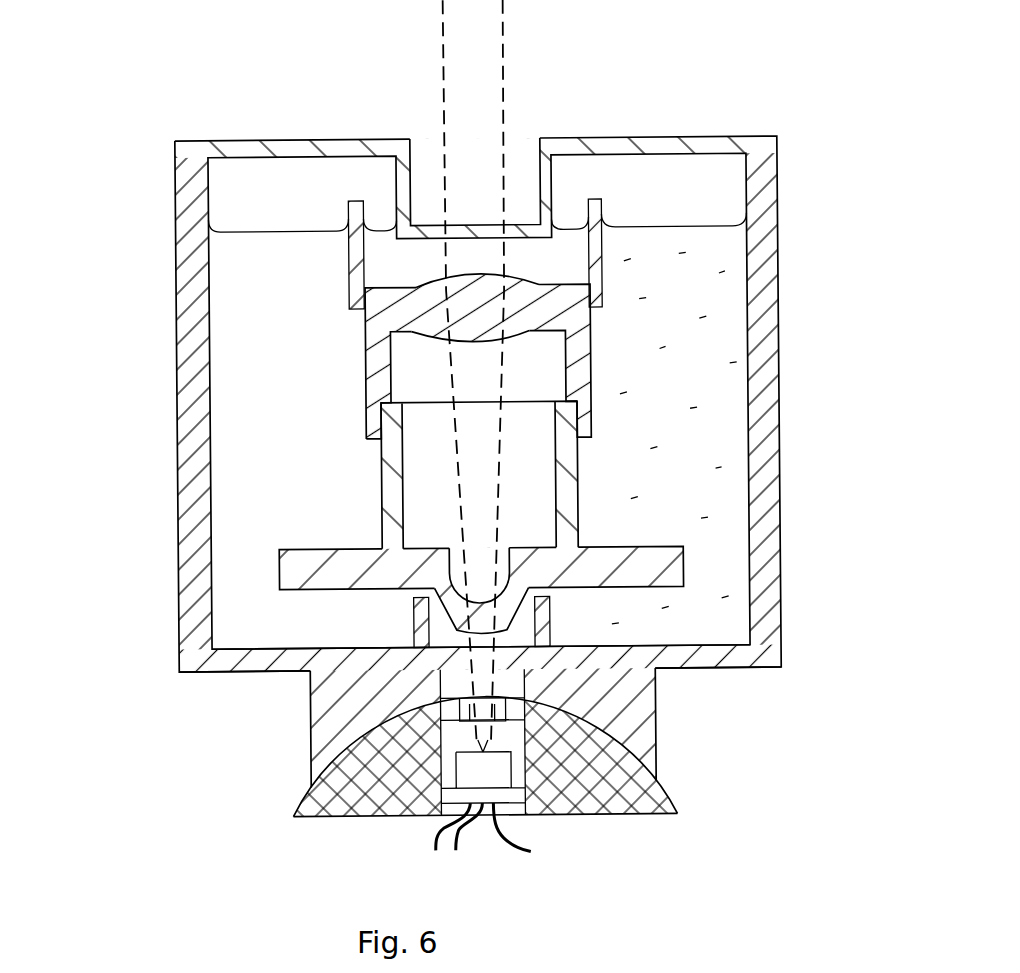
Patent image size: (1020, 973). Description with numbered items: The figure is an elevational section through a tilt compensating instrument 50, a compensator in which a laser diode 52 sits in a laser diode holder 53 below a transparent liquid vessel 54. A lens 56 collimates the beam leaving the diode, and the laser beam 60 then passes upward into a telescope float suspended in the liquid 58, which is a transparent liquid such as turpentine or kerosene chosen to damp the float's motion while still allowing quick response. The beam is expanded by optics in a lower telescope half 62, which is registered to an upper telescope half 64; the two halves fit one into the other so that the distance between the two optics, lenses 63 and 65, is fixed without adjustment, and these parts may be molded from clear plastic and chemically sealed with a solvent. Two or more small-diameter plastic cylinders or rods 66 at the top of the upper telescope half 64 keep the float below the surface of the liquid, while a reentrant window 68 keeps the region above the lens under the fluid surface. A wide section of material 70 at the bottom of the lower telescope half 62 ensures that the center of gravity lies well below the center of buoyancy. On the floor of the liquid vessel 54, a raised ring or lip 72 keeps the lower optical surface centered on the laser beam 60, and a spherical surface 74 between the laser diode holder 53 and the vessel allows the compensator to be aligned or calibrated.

The sensor assembly 50 is at (202, 62).
The laser diode 52 is at (487, 792).
The laser diode holder 53 is at (635, 813).
The transparent liquid vessel 54 is at (752, 667).
The lens 56 is at (493, 700).
The liquid 58 is at (683, 615).
The laser beam 60 is at (502, 468).
The lower telescope half 62 is at (557, 398).
The lens 63 is at (458, 627).
The upper telescope half 64 is at (593, 323).
The lens 65 is at (507, 273).
The plastic cylinders or rods 66 is at (845, 170).
The reentrant window 68 is at (478, 226).
The wide section of material 70 is at (280, 552).
The raised ring or lip 72 is at (412, 630).
The spherical surface 74 is at (297, 800).